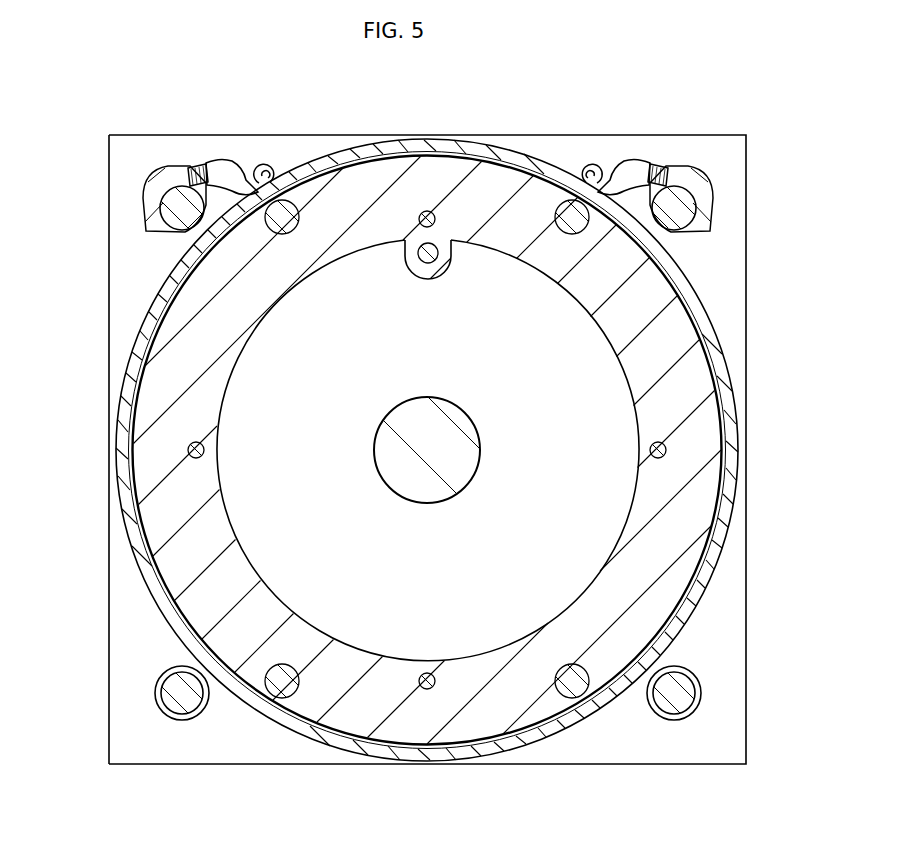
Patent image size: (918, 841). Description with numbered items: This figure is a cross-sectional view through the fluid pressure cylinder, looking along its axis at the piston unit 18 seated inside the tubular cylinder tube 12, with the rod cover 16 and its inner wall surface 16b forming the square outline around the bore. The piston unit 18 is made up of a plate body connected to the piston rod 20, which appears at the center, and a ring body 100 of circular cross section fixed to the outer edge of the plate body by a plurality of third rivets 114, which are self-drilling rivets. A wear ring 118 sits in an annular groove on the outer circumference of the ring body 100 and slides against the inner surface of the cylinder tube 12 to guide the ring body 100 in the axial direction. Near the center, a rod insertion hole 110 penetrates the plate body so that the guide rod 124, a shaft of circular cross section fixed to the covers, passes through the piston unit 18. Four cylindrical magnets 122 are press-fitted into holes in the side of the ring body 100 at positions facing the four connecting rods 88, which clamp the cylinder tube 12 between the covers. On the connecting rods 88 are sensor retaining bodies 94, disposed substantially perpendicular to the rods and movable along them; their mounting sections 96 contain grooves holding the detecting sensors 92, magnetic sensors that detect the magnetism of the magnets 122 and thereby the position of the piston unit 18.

The cylinder tube 12 is at (405, 160).
The rod cover 16 is at (758, 295).
The inner wall surface 16b is at (127, 605).
The piston unit 18 is at (688, 544).
The piston rod 20 is at (457, 388).
The connecting rods 88 is at (185, 215).
The detecting sensors 92 is at (263, 163).
The sensor retaining bodies 94 is at (158, 164).
The mounting sections 96 is at (214, 162).
The ring body 100 is at (152, 383).
The rod insertion hole 110 is at (437, 263).
The third rivets 114 is at (428, 211).
The wear ring 118 is at (420, 746).
The magnets 122 is at (290, 200).
The guide rod 124 is at (405, 262).